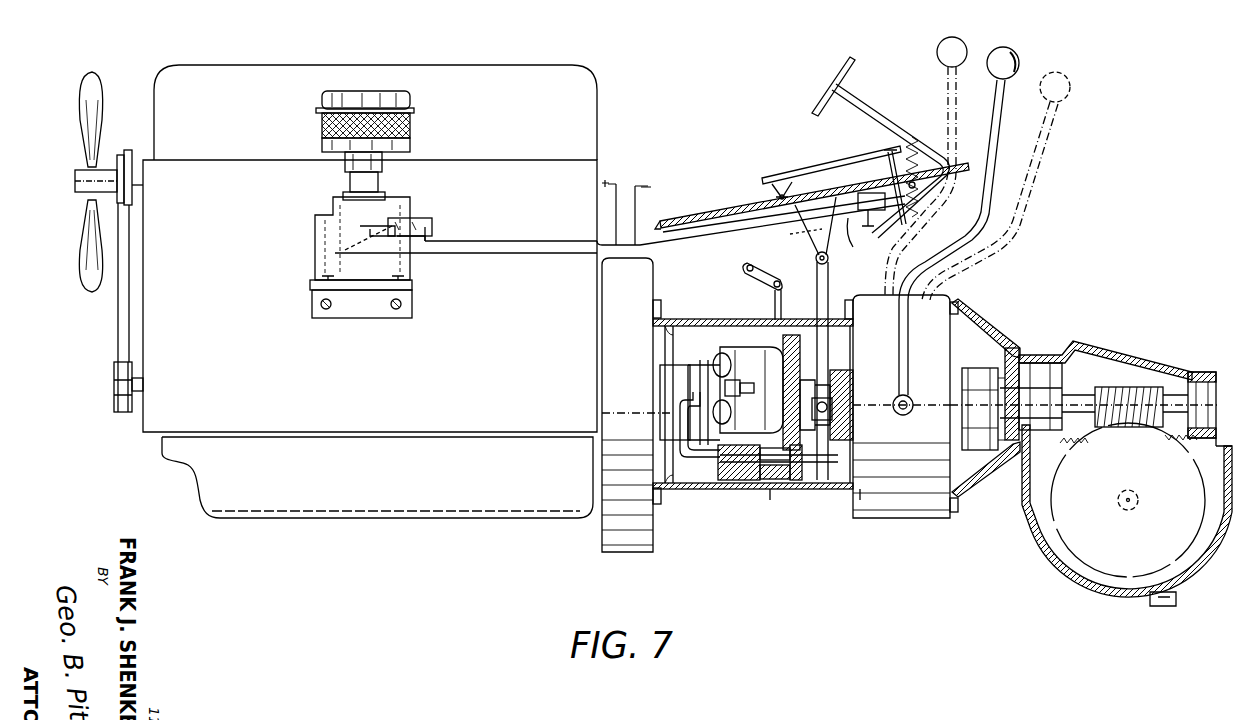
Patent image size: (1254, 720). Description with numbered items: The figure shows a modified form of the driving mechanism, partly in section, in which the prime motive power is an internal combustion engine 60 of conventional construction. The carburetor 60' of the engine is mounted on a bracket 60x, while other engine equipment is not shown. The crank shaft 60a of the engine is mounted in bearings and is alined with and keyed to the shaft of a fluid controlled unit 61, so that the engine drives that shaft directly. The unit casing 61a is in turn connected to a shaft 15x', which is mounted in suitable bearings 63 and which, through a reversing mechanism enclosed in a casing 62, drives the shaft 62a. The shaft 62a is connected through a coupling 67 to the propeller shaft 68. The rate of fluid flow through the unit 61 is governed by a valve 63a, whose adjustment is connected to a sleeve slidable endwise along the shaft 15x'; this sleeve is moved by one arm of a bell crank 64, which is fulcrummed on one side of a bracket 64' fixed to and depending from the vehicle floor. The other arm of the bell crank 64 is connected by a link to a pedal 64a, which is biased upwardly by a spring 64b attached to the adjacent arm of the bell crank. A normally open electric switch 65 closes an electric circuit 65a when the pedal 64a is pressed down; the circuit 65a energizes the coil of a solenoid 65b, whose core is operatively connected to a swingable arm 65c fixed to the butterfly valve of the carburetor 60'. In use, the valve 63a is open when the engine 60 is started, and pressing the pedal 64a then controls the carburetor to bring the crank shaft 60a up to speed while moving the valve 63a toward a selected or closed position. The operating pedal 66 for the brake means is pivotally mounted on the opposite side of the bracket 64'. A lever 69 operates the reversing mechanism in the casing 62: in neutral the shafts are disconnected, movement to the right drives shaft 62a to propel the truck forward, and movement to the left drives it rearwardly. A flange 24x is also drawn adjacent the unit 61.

The internal combustion engine 60 is at (370, 291).
The carburetor 60' is at (382, 185).
The bracket 60x is at (345, 310).
The crank shaft 60a is at (660, 392).
The electric circuit 65a is at (590, 250).
The solenoid 65b is at (431, 224).
The swingable arm 65c is at (360, 237).
The fluid controlled unit 61 is at (735, 366).
The unit casing 61a is at (742, 312).
The coupling flange 24x is at (680, 372).
The shaft 15x' is at (763, 436).
The bearings 63 is at (846, 385).
The valve 63a is at (778, 490).
The casing 62 is at (867, 515).
The shaft 62a is at (955, 392).
The coupling 67 is at (992, 442).
The propeller shaft 68 is at (1083, 432).
The bell crank 64 is at (803, 338).
The bracket 64' is at (804, 213).
The pedal 64a is at (848, 170).
The spring 64b is at (990, 218).
The electric switch 65 is at (855, 233).
The brake pedal 66 is at (848, 68).
The lever 69 is at (995, 112).